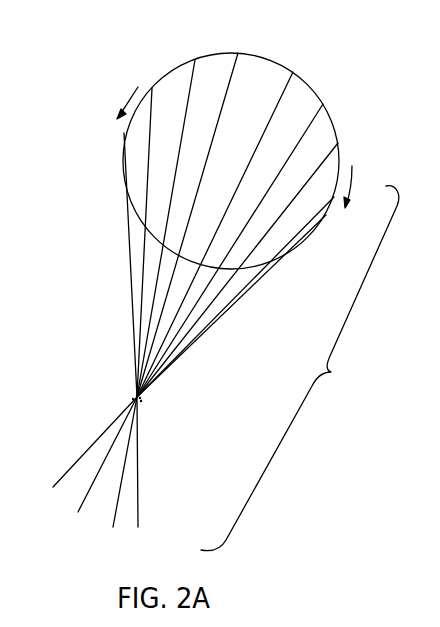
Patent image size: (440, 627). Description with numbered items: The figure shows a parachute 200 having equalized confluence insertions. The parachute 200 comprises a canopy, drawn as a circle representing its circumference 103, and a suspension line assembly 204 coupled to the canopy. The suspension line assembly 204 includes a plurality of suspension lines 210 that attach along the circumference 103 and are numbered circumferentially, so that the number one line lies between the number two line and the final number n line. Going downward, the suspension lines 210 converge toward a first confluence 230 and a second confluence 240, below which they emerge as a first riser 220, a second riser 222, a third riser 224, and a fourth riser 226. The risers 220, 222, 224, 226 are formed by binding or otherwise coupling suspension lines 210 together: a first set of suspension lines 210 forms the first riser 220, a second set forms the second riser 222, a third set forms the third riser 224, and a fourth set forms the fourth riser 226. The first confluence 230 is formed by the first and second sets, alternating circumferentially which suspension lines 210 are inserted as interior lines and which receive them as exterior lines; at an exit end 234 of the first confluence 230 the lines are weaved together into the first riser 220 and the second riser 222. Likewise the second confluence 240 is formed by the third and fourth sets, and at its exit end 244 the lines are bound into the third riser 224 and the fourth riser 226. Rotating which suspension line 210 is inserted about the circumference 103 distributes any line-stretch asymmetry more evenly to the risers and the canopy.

The parachute 200 is at (81, 76).
The circumference 103 is at (338, 119).
The suspension lines 210 is at (146, 183).
The suspension line assembly 204 is at (300, 368).
The first riser 220 is at (79, 447).
The second riser 222 is at (99, 461).
The third riser 224 is at (118, 469).
The fourth riser 226 is at (147, 469).
The first confluence 230 is at (136, 396).
The exit end 234 is at (131, 399).
The second confluence 240 is at (140, 398).
The exit end 244 is at (141, 401).